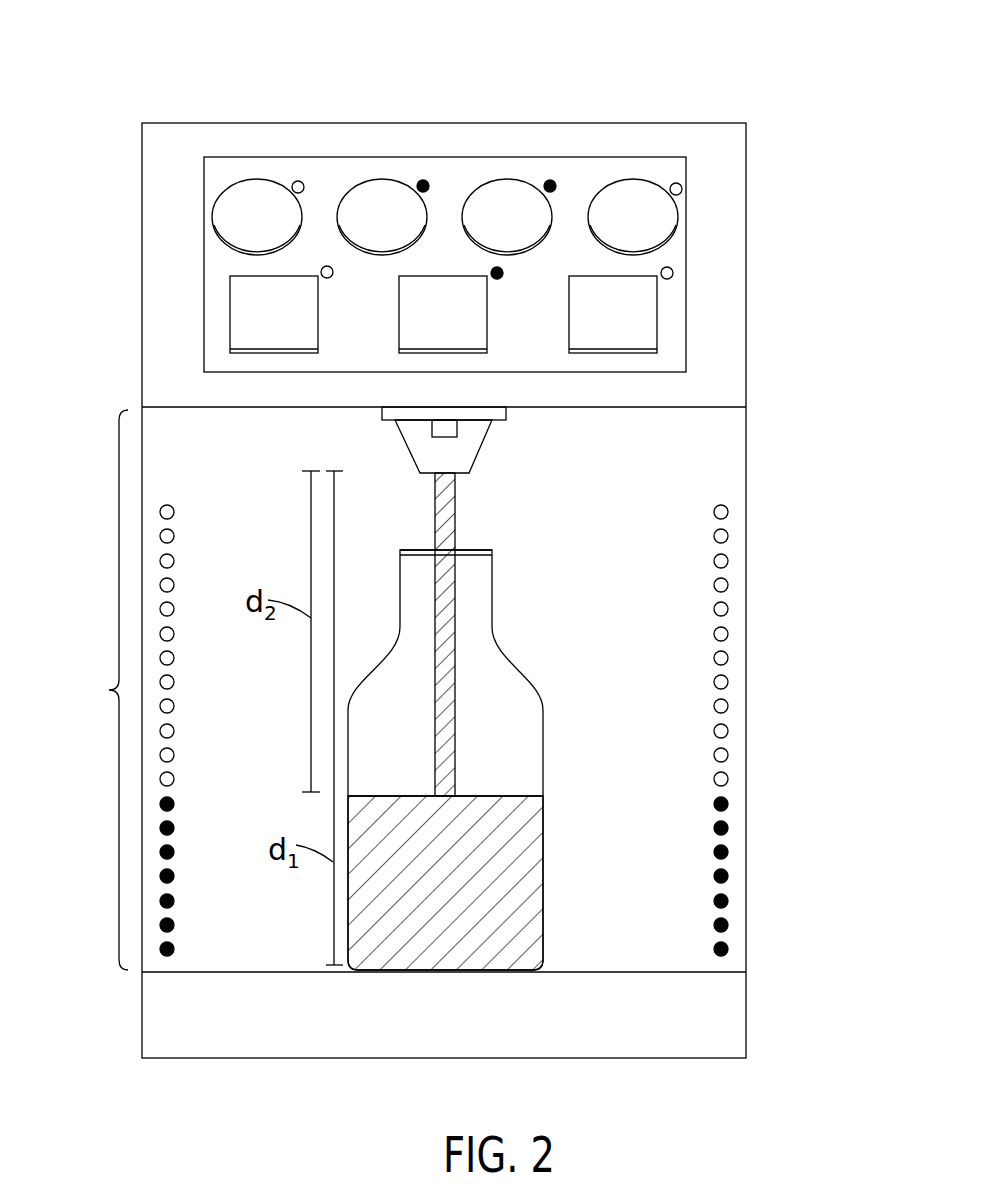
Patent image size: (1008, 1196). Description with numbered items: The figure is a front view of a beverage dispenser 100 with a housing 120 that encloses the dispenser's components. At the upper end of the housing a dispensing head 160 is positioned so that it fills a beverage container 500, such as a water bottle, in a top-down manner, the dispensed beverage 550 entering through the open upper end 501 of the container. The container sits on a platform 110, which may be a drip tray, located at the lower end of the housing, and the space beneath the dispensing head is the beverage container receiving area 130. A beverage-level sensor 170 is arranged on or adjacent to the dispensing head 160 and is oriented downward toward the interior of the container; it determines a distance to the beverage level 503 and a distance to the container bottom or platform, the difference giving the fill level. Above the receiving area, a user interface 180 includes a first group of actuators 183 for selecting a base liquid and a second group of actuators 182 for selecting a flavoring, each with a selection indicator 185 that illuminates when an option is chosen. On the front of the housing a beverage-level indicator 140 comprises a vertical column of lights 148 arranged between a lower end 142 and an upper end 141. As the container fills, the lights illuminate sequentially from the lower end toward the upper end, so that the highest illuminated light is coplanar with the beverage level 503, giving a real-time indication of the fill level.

The beverage dispenser 100 is at (192, 96).
The platform 110 is at (715, 1026).
The housing 120 is at (142, 200).
The beverage container receiving area 130 is at (101, 690).
The beverage-level indicator 140 is at (507, 717).
The upper end 141 is at (727, 509).
The lower end 142 is at (728, 948).
The lights 148 is at (727, 634).
The dispensing head 160 is at (412, 456).
The beverage-level sensor 170 is at (460, 428).
The user interface 180 is at (578, 190).
The second group of actuators 182 is at (492, 202).
The first group of actuators 183 is at (410, 335).
The selection indicators 185 is at (326, 266).
The beverage container 500 is at (478, 722).
The open upper end 501 is at (484, 548).
The beverage level 503 is at (513, 795).
The beverage 550 is at (528, 878).